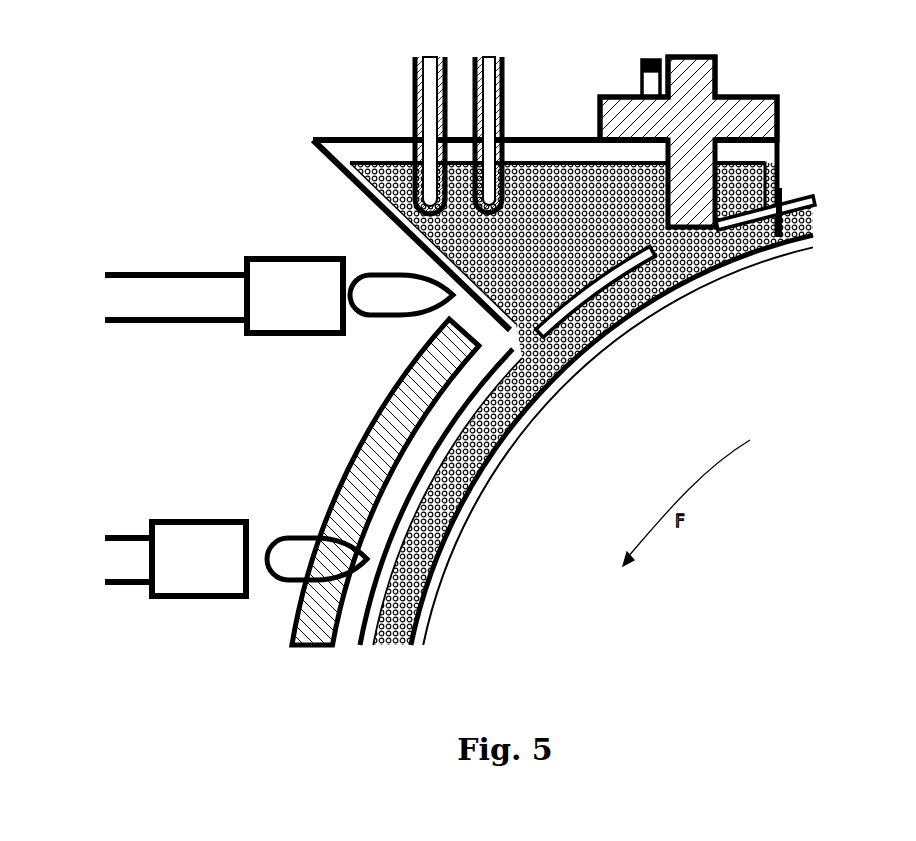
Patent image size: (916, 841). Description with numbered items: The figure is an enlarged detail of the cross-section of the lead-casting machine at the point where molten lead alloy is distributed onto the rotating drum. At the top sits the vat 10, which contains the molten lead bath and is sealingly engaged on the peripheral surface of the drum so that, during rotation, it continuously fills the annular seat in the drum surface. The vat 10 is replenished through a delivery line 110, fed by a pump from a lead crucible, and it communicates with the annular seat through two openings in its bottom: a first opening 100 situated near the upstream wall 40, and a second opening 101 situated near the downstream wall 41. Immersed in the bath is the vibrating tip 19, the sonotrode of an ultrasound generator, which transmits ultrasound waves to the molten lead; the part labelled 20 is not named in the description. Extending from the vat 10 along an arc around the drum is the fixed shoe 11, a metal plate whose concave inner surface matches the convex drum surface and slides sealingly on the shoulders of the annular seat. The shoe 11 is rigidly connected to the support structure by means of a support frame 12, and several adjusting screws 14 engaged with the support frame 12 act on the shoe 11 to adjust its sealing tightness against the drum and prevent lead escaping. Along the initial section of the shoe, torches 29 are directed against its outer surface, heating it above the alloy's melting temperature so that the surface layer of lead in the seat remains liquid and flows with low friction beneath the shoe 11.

The vat 10 is at (535, 195).
The fixed shoe 11 is at (372, 645).
The support frame 12 is at (305, 632).
The adjusting screws 14 is at (402, 360).
The vibrating tip 19 is at (720, 62).
The housing 20 is at (745, 118).
The torches 29 is at (275, 307).
The upstream wall 40 is at (788, 185).
The downstream wall 41 is at (380, 206).
The first opening 100 is at (700, 287).
The second opening 101 is at (576, 380).
The delivery line 110 is at (418, 104).